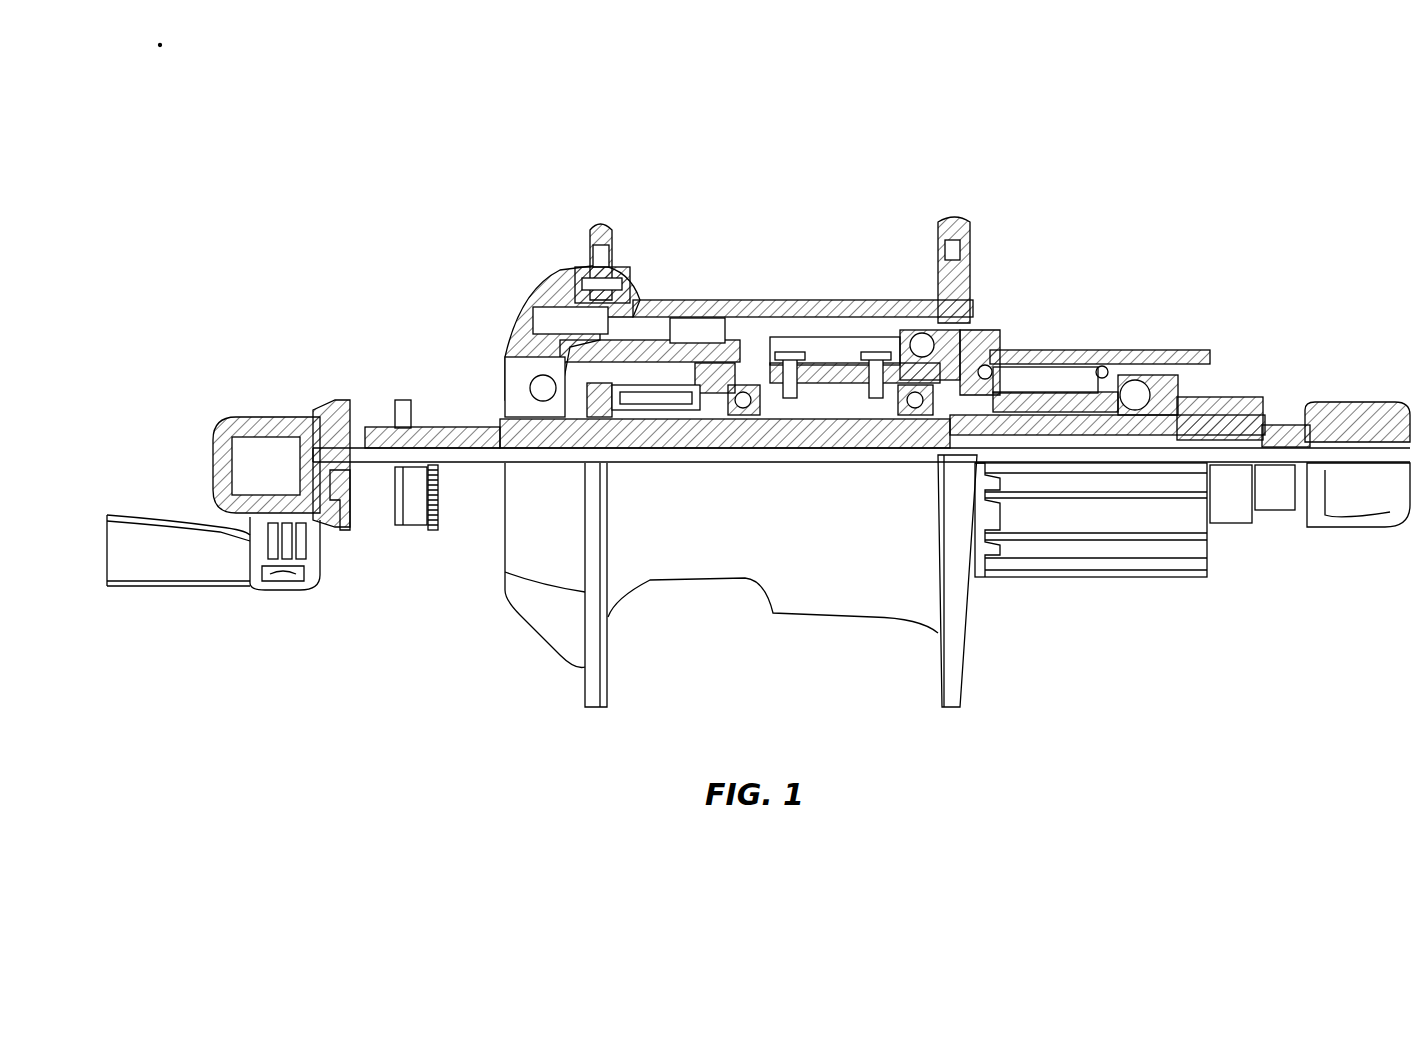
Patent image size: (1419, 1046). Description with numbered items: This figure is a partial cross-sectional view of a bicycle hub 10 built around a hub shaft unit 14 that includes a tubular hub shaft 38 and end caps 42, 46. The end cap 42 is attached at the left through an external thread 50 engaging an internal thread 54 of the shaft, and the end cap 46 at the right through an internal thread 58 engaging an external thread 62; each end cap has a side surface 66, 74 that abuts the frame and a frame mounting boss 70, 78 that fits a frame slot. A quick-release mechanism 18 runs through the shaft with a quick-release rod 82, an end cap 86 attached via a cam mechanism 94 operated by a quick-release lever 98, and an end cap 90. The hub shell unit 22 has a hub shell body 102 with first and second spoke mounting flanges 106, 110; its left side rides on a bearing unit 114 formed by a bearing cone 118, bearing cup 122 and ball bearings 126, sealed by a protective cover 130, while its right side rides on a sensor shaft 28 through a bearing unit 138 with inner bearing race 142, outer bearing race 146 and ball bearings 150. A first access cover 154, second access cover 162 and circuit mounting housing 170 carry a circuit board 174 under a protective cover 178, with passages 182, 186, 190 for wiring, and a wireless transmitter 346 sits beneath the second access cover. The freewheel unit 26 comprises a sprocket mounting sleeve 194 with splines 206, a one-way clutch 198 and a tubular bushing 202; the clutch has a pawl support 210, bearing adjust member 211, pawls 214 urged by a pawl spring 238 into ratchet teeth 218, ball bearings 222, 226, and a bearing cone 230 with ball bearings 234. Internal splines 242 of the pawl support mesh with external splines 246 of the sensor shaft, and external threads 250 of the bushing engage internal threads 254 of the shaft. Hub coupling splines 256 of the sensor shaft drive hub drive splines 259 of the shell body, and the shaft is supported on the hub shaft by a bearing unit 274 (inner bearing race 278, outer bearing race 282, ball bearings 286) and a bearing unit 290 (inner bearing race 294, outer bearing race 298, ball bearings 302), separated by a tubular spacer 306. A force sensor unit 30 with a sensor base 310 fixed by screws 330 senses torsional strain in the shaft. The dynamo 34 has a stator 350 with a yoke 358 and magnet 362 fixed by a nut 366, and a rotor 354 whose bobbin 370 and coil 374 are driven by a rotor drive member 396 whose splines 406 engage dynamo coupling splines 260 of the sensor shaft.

The bicycle hub 10 is at (437, 140).
The hub shaft unit 14 is at (1260, 398).
The quick-release mechanism 18 is at (205, 428).
The hub shell unit 22 is at (872, 640).
The freewheel unit 26 is at (1070, 602).
The sensor shaft 28 is at (835, 400).
The force sensor unit 30 is at (826, 352).
The dynamo 34 is at (656, 368).
The hub shaft 38 is at (485, 425).
The end cap 42 is at (372, 428).
The end cap 46 is at (1275, 432).
The external thread 50 is at (432, 427).
The internal thread 54 is at (470, 422).
The internal thread 58 is at (1228, 410).
The external thread 62 is at (1205, 400).
The side surface 66 is at (397, 525).
The frame mounting boss 70 is at (383, 490).
The side surface 74 is at (1260, 510).
The frame mounting boss 78 is at (1276, 486).
The quick-release rod 82 is at (330, 455).
The end cap 86 is at (214, 455).
The end cap 90 is at (1385, 415).
The cam mechanism 94 is at (266, 410).
The quick-release lever 98 is at (185, 585).
The hub shell body 102 is at (678, 582).
The first spoke mounting flange 106 is at (596, 703).
The second spoke mounting flange 110 is at (954, 695).
The bearing unit 114 is at (545, 395).
The bearing cone 118 is at (492, 402).
The bearing cup 122 is at (522, 386).
The ball bearings 126 is at (497, 385).
The protective cover 130 is at (460, 513).
The bearing unit 138 is at (931, 317).
The inner bearing race 142 is at (900, 355).
The outer bearing race 146 is at (940, 315).
The ball bearings 150 is at (912, 337).
The first access cover 154 is at (878, 352).
The second access cover 162 is at (632, 330).
The circuit mounting housing 170 is at (608, 300).
The circuit board 174 is at (535, 372).
The protective cover 178 is at (540, 620).
The passage 182 is at (790, 345).
The passage 186 is at (765, 338).
The passage 190 is at (662, 330).
The sprocket mounting sleeve 194 is at (1165, 570).
The one-way clutch 198 is at (1043, 364).
The tubular bushing 202 is at (1012, 475).
The splines 206 is at (1102, 518).
The pawl support 210 is at (1132, 382).
The bearing adjust member 211 is at (1140, 395).
The pawls 214 is at (1052, 370).
The ratchet teeth 218 is at (1075, 372).
The ball bearings 222 is at (978, 370).
The ball bearings 226 is at (1106, 368).
The bearing cone 230 is at (1165, 400).
The ball bearings 234 is at (1150, 392).
The pawl spring 238 is at (1012, 375).
The internal splines 242 is at (988, 380).
The external splines 246 is at (962, 330).
The external threads 250 is at (942, 470).
The internal threads 254 is at (930, 440).
The hub coupling splines 256 is at (742, 355).
The hub drive splines 259 is at (735, 330).
The dynamo coupling splines 260 is at (725, 340).
The bearing unit 274 is at (906, 440).
The inner bearing race 278 is at (927, 440).
The outer bearing race 282 is at (885, 400).
The ball bearings 286 is at (905, 400).
The bearing unit 290 is at (745, 420).
The inner bearing race 294 is at (728, 420).
The outer bearing race 298 is at (790, 415).
The ball bearings 302 is at (750, 410).
The tubular spacer 306 is at (806, 440).
The sensor base 310 is at (836, 370).
The screws 330 is at (790, 400).
The wireless transmitter 346 is at (694, 325).
The stator 350 is at (582, 388).
The rotor 354 is at (646, 434).
The yoke 358 is at (592, 455).
The magnet 362 is at (582, 305).
The nut 366 is at (570, 440).
The bobbin 370 is at (628, 440).
The coil 374 is at (672, 410).
The rotor drive member 396 is at (712, 410).
The splines 406 is at (575, 345).